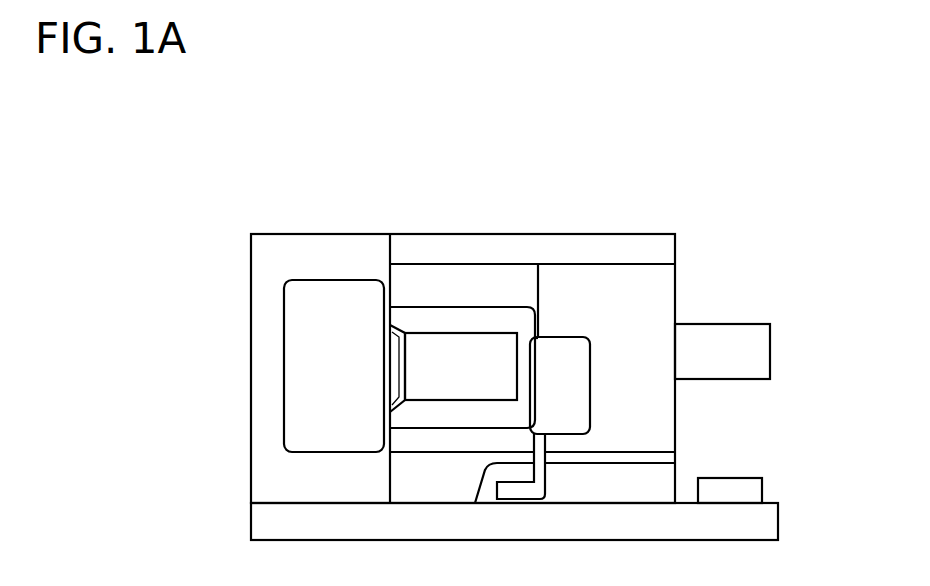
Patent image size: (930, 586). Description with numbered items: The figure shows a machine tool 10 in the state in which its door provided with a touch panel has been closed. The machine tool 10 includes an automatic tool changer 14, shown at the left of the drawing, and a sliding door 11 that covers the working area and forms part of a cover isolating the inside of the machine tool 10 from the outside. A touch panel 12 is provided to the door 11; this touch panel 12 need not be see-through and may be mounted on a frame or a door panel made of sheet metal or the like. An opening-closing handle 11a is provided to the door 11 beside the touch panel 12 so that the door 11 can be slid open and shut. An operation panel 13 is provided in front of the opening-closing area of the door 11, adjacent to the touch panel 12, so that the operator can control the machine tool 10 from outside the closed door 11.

The machine tool 10 is at (710, 190).
The sliding door 11 is at (410, 272).
The opening-closing handle 11a is at (393, 343).
The touch panel 12 is at (445, 345).
The operation panel 13 is at (580, 383).
The automatic tool changer 14 is at (262, 380).